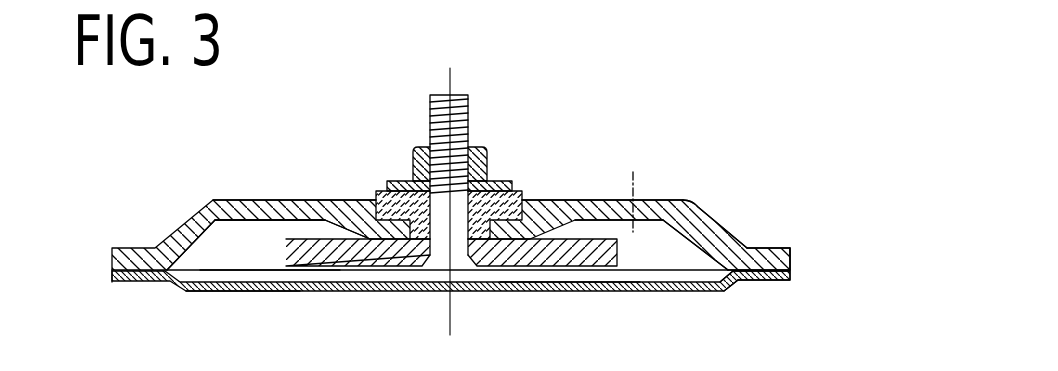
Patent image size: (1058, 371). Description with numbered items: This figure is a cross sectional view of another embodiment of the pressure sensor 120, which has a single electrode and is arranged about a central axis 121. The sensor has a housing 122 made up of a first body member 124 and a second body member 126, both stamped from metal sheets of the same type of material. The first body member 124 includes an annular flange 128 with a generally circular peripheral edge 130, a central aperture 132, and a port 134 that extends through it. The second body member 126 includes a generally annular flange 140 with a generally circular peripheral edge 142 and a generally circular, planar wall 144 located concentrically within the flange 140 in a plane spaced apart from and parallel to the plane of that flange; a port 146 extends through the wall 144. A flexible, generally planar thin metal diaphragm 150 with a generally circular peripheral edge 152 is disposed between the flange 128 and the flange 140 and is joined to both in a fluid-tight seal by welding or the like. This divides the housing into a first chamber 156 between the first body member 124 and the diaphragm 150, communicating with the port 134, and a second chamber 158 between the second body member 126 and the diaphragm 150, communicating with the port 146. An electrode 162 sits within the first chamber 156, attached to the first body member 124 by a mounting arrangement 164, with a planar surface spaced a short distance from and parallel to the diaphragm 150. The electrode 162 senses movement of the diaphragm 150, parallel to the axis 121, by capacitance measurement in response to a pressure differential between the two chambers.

The pressure sensor 120 is at (707, 97).
The central axis 121 is at (452, 80).
The housing 122 is at (719, 221).
The first body member 124 is at (688, 199).
The second body member 126 is at (641, 290).
The annular flange 128 is at (777, 246).
The peripheral edge 130 is at (793, 260).
The central aperture 132 is at (487, 236).
The port 134 is at (642, 198).
The annular flange 140 is at (760, 279).
The peripheral edge 142 is at (800, 275).
The circular wall 144 is at (558, 283).
The port 146 is at (455, 290).
The diaphragm 150 is at (222, 291).
The peripheral edge 152 is at (793, 272).
The first chamber 156 is at (228, 235).
The second chamber 158 is at (273, 278).
The electrode 162 is at (310, 236).
The mounting arrangement 164 is at (430, 135).